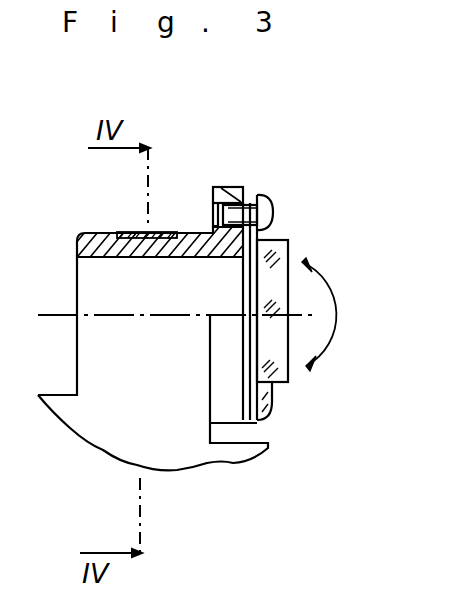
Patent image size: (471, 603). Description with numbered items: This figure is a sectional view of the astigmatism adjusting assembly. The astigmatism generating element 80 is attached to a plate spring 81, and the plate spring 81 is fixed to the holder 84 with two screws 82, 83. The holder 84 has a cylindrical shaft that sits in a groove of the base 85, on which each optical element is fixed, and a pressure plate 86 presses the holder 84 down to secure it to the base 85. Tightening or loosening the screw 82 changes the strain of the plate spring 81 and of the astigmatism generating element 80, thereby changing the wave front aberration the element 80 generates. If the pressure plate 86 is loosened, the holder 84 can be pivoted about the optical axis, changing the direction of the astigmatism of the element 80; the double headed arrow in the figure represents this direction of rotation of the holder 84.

The astigmatism generating element 80 is at (290, 370).
The plate spring 81 is at (287, 248).
The screw 82 is at (270, 200).
The screw 83 is at (270, 412).
The holder 84 is at (193, 233).
The base 85 is at (223, 457).
The pressure plate 86 is at (132, 232).